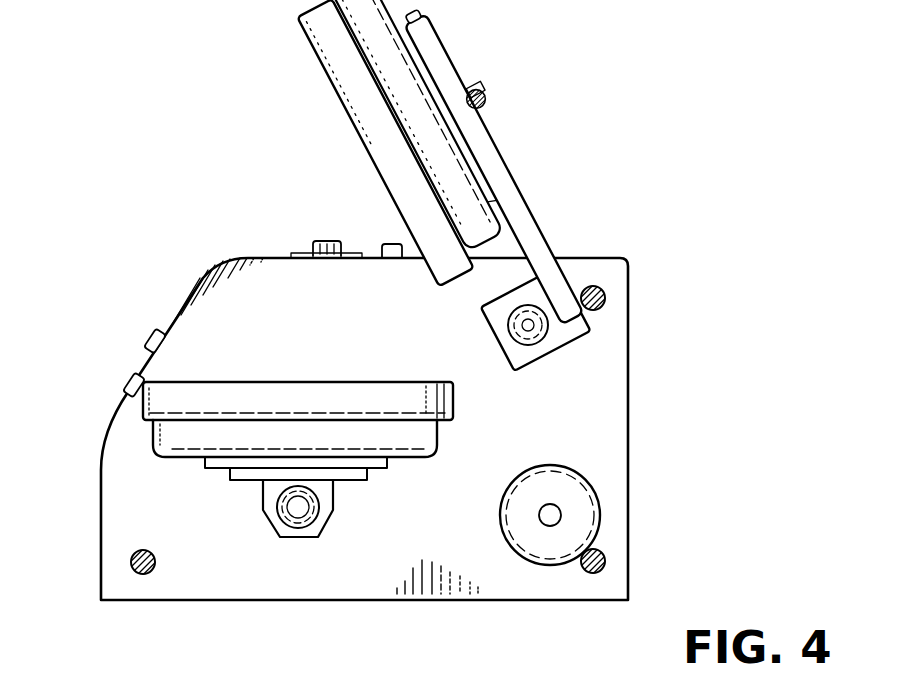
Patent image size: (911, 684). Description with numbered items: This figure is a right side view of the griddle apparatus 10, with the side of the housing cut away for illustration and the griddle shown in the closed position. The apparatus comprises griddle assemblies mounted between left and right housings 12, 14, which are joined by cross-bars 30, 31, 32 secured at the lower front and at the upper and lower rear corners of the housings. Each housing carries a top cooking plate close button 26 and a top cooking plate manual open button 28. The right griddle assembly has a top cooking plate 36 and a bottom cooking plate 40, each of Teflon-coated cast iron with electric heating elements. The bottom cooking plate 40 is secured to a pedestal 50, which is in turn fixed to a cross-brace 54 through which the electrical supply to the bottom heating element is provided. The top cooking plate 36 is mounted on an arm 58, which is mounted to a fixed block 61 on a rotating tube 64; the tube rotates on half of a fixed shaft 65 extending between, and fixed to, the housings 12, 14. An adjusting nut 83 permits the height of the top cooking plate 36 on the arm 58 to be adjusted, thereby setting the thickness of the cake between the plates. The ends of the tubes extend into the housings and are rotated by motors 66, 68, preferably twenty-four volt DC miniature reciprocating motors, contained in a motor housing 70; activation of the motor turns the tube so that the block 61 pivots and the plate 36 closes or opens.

The waffle cone griddle apparatus 10 is at (726, 320).
The left housing 12 is at (364, 445).
The right housing 14 is at (297, 606).
The top cooking plate close button 26 is at (149, 336).
The top cooking plate manual open button 28 is at (121, 385).
The cross-bar 30 is at (135, 551).
The cross-bar 31 is at (609, 571).
The cross-bar 32 is at (608, 285).
The top cooking plate 36 is at (337, 109).
The bottom cooking plate 40 is at (272, 381).
The pedestal 50 is at (383, 476).
The cross-brace 54 is at (291, 511).
The arm 58 is at (540, 222).
The fixed block 61 is at (492, 299).
The rotating tube 64 is at (507, 338).
The fixed shaft 65 is at (534, 332).
The motor 66 is at (619, 515).
The motor 68 is at (608, 489).
The motor housing 70 is at (616, 503).
The adjusting nut 83 is at (482, 88).